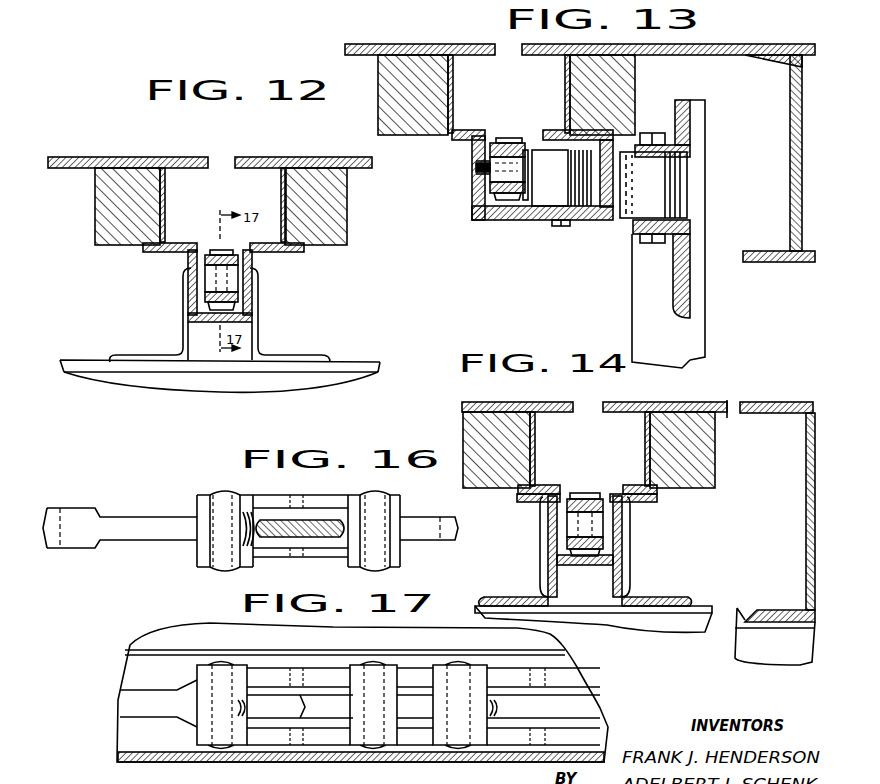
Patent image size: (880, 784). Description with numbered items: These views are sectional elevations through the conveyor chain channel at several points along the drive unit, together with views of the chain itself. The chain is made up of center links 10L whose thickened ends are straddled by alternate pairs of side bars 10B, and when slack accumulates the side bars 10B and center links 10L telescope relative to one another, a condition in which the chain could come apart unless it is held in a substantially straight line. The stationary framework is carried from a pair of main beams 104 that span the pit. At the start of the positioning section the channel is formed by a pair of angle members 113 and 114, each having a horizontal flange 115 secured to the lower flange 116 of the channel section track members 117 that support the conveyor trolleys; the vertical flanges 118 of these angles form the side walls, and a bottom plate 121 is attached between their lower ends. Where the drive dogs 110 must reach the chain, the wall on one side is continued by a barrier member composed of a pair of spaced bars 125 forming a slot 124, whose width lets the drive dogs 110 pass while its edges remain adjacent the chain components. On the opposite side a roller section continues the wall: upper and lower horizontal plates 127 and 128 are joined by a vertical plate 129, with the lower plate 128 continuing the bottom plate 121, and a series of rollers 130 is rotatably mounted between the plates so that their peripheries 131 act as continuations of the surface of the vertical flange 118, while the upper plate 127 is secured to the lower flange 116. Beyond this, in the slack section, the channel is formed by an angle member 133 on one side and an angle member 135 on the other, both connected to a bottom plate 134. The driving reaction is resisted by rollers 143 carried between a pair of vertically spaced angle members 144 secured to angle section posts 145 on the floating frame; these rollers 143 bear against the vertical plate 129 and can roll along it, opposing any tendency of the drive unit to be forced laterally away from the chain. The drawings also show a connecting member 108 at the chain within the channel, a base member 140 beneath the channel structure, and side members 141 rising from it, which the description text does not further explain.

In FIG. 12, the center links 10L is at (206, 283).
In FIG. 13, the center links 10L is at (493, 161).
In FIG. 14, the center links 10L is at (604, 530).
In FIG. 16, the center links 10L is at (154, 538).
In FIG. 17, the center links 10L is at (172, 708).
In FIG. 16, the side bars 10B is at (325, 551).
In FIG. 17, the side bars 10B is at (278, 682).
In FIG. 13, the main beams 104 is at (791, 108).
In FIG. 14, the main beams 104 is at (810, 476).
In FIG. 12, the nut 108 is at (222, 252).
In FIG. 13, the nut 108 is at (505, 139).
In FIG. 14, the nut 108 is at (589, 550).
In FIG. 13, the drive dogs 110 is at (475, 168).
In FIG. 16, the drive dogs 110 is at (306, 522).
In FIG. 14, the angle member 113 is at (546, 503).
In FIG. 14, the angle member 114 is at (623, 503).
In FIG. 14, the horizontal flange 115 is at (546, 494).
In FIG. 12, the lower flange 116 is at (166, 246).
In FIG. 13, the lower flange 116 is at (555, 132).
In FIG. 14, the lower flange 116 is at (541, 488).
In FIG. 12, the channel section track members 117 is at (164, 218).
In FIG. 13, the channel section track members 117 is at (567, 80).
In FIG. 14, the channel section track members 117 is at (533, 461).
In FIG. 14, the vertical flanges 118 is at (548, 531).
In FIG. 14, the bottom plate 121 is at (614, 565).
In FIG. 13, the slot 124 is at (474, 168).
In FIG. 13, the bars 125 is at (474, 197).
In FIG. 13, the upper horizontal plate 127 is at (551, 170).
In FIG. 13, the lower horizontal plate 128 is at (536, 221).
In FIG. 13, the vertical plate 129 is at (604, 206).
In FIG. 13, the rollers 130 is at (563, 178).
In FIG. 13, the peripheries 131 is at (527, 201).
In FIG. 12, the angle member 133 is at (254, 260).
In FIG. 12, the bottom plate 134 is at (243, 322).
In FIG. 12, the angle member 135 is at (186, 253).
In FIG. 12, the base plate 140 is at (325, 384).
In FIG. 14, the base plate 140 is at (661, 618).
In FIG. 12, the rail flange 141 is at (183, 335).
In FIG. 14, the rail flange 141 is at (547, 566).
In FIG. 13, the rollers 143 is at (676, 202).
In FIG. 13, the angle members 144 is at (686, 128).
In FIG. 13, the angle section posts 145 is at (699, 343).